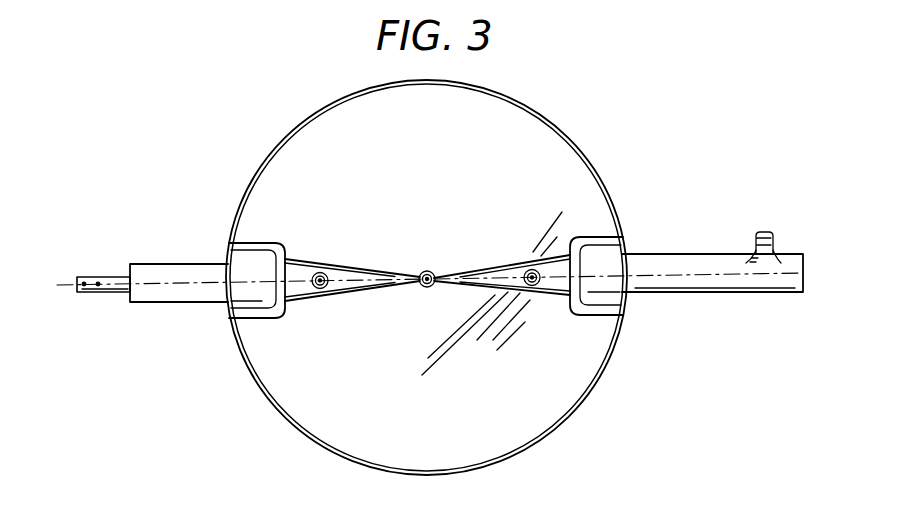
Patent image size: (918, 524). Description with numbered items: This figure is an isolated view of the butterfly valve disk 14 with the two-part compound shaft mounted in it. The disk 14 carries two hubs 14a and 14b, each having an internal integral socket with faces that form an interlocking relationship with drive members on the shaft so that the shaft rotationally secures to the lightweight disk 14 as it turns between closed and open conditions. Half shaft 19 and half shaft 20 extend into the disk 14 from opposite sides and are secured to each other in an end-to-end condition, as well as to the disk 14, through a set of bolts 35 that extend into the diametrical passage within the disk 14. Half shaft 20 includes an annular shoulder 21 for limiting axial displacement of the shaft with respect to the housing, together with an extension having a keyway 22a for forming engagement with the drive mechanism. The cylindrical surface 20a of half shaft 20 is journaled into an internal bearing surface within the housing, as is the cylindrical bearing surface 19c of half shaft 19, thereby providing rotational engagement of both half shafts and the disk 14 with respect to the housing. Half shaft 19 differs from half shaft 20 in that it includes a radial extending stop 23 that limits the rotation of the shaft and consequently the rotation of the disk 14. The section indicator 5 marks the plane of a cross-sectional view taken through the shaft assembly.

The section line 5- 5 is at (49, 318).
The disk 14 is at (538, 158).
The hub 14a is at (255, 307).
The hub 14b is at (605, 300).
The bolts 35 is at (530, 268).
The half shaft 20 is at (165, 245).
The cylindrical surface 20a is at (177, 298).
The annular shoulder 21 is at (128, 297).
The keyway 22a is at (113, 275).
The half shaft 19 is at (685, 280).
The cylindrical bearing surface 19c is at (733, 294).
The radial extending stop 23 is at (757, 234).